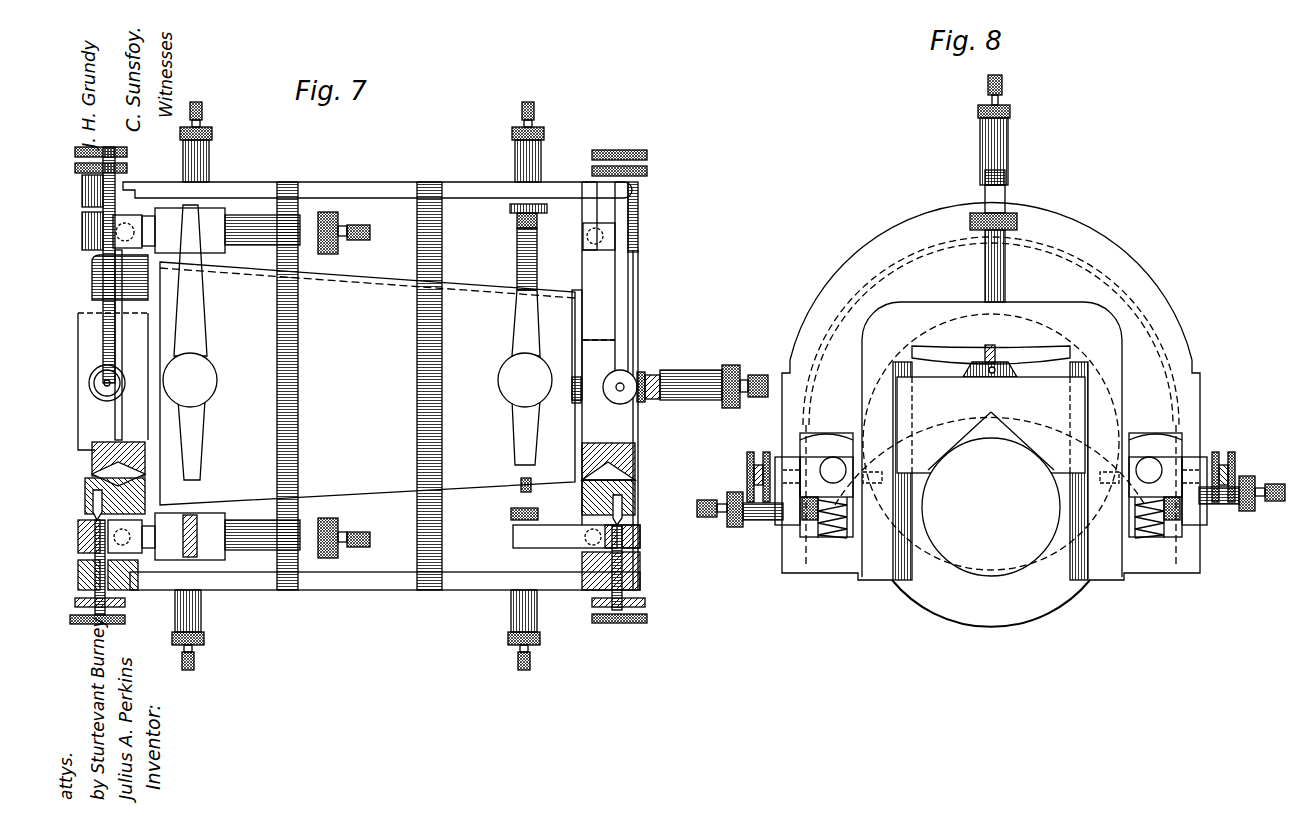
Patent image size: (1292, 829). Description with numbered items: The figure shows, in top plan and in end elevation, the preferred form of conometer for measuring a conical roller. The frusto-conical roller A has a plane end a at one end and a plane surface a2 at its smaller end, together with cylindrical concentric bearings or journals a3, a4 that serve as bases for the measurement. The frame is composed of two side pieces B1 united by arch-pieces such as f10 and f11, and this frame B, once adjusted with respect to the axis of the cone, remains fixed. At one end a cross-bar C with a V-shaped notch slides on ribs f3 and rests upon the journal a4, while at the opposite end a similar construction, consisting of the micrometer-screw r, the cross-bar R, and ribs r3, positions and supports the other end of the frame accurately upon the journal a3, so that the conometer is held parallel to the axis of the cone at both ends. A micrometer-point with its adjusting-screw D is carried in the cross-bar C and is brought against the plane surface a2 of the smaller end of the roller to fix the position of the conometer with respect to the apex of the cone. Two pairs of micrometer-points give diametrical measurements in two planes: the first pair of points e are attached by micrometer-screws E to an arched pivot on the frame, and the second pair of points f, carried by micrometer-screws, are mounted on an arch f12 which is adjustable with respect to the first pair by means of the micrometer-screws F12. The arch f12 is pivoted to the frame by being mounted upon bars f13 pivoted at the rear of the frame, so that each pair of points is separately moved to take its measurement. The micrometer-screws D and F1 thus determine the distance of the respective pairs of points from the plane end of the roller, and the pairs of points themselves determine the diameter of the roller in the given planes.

In FIG. 7, the side piece B1 is at (335, 190).
In FIG. 7, the frame B is at (335, 585).
In FIG. 7, the arch-piece f11 is at (298, 345).
In FIG. 7, the frusto-conical roller A is at (367, 383).
In FIG. 8, the frusto-conical roller A is at (935, 615).
In FIG. 7, the arch f12 is at (203, 296).
In FIG. 8, the arch f12 is at (1048, 238).
In FIG. 7, the cylindrical bearing a4 is at (575, 420).
In FIG. 8, the cylindrical bearing a4 is at (1000, 625).
In FIG. 7, the micrometer-point e is at (532, 486).
In FIG. 7, the micrometer-screw F12 is at (340, 248).
In FIG. 7, the micrometer-screw E is at (512, 150).
In FIG. 7, the micrometer-screw F1 is at (205, 150).
In FIG. 8, the micrometer-screw F1 is at (727, 527).
In FIG. 7, the bar f13 is at (150, 200).
In FIG. 7, the arch-piece f10 is at (112, 290).
In FIG. 8, the arch-piece f10 is at (1075, 318).
In FIG. 7, the micrometer-screw r is at (95, 368).
In FIG. 8, the micrometer-screw r is at (978, 133).
In FIG. 7, the cylindrical bearing a3 is at (88, 410).
In FIG. 8, the cylindrical bearing a3 is at (991, 507).
In FIG. 7, the cross-bar R is at (150, 440).
In FIG. 8, the cross-bar R is at (990, 462).
In FIG. 7, the rib r3 is at (193, 458).
In FIG. 8, the rib r3 is at (895, 585).
In FIG. 7, the micrometer-point f is at (190, 508).
In FIG. 8, the micrometer-point f is at (828, 585).
In FIG. 7, the plane end a2 is at (577, 315).
In FIG. 7, the plane end a is at (583, 382).
In FIG. 7, the cross-bar C is at (630, 378).
In FIG. 8, the cross-bar C is at (1008, 182).
In FIG. 7, the rib f3 is at (637, 472).
In FIG. 7, the micrometer-screw D is at (727, 376).